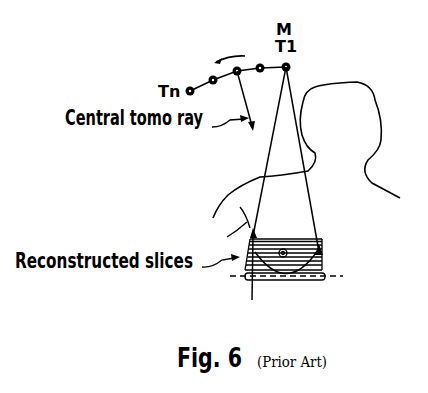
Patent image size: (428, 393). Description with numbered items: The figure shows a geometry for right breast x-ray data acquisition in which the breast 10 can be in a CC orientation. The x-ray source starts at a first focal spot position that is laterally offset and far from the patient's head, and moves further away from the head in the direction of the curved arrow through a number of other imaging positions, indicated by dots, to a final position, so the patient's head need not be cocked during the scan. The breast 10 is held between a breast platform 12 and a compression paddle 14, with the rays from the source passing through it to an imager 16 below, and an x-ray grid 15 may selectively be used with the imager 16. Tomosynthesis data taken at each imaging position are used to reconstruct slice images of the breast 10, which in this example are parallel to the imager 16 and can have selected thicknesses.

The compression paddle 14 is at (304, 237).
The breast 10 is at (320, 255).
The breast platform 12 is at (323, 267).
The x-ray grid 15 is at (343, 276).
The imager 16 is at (312, 280).